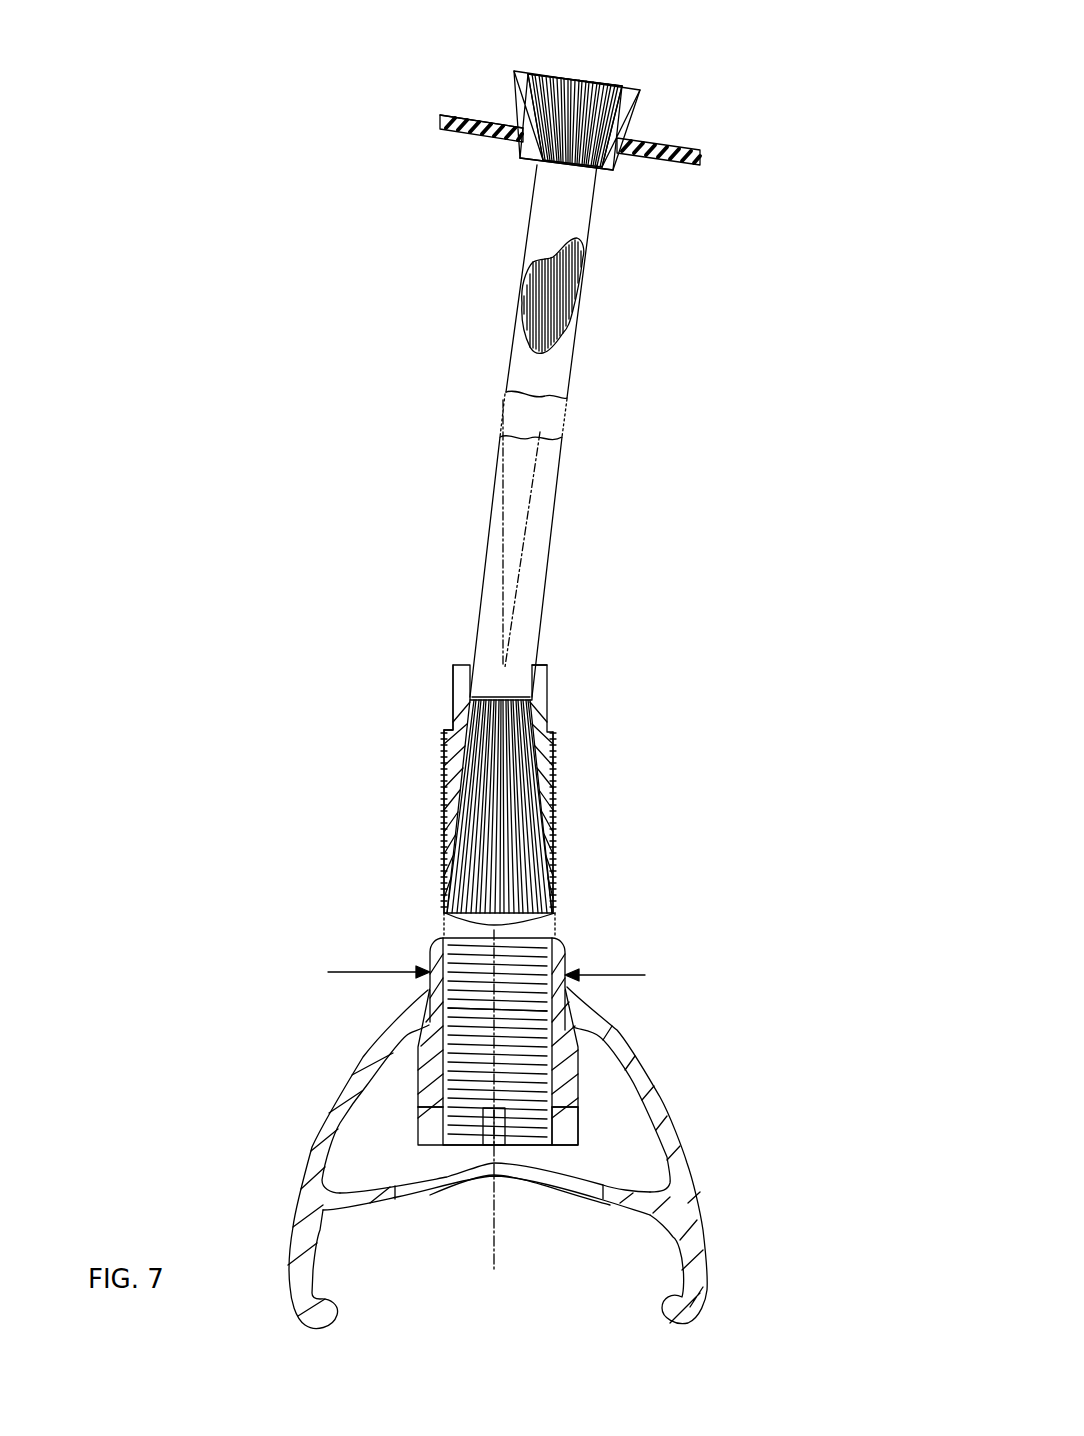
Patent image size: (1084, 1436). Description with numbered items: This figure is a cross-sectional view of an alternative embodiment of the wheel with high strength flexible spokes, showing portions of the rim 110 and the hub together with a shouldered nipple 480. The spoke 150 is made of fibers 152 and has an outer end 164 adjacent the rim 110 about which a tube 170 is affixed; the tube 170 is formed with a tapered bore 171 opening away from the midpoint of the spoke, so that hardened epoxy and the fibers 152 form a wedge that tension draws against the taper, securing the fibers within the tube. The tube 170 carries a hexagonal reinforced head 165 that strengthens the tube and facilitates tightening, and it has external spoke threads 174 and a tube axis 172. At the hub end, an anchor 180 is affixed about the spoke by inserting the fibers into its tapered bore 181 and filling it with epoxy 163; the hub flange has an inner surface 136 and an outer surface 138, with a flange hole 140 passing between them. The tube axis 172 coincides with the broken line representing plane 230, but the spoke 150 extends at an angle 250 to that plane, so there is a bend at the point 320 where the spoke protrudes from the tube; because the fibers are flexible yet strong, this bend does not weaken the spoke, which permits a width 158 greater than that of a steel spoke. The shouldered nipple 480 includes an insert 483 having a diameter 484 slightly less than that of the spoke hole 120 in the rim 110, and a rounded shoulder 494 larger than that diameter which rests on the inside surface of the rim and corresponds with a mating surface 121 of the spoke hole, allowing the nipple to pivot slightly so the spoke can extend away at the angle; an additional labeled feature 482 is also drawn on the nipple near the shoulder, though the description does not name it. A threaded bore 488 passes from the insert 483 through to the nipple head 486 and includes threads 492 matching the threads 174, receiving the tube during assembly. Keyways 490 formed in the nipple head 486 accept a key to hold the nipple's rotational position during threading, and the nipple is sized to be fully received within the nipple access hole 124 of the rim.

The rim 110 is at (690, 1205).
The spoke hole 120 is at (428, 992).
The mating surface 121 is at (420, 1023).
The nipple access hole 124 is at (597, 1195).
The inner surface 136 is at (456, 112).
The outer surface 138 is at (487, 128).
The flange hole 140 is at (520, 148).
The spoke 150 is at (442, 313).
The fibers 152 is at (498, 777).
The width 158 is at (620, 626).
The epoxy 163 is at (585, 78).
The outer end 164 is at (475, 680).
The hexagonal reinforced head 165 is at (450, 712).
The tube 170 is at (445, 835).
The tapered bore 171 is at (548, 784).
The tube axis 172 is at (493, 1220).
The external spoke threads 174 is at (552, 840).
The anchor 180 is at (627, 129).
The tapered bore 181 is at (530, 103).
The plane 230 is at (525, 520).
The angle 250 is at (610, 465).
The point 320 is at (538, 665).
The shouldered nipple 480 is at (693, 965).
The shell 482 is at (568, 988).
The insert 483 is at (432, 948).
The diameter 484 is at (366, 971).
The nipple head 486 is at (440, 1082).
The threaded bore 488 is at (480, 1015).
The keyway 490 is at (565, 1131).
The threads 492 is at (523, 1147).
The shoulder 494 is at (593, 1026).